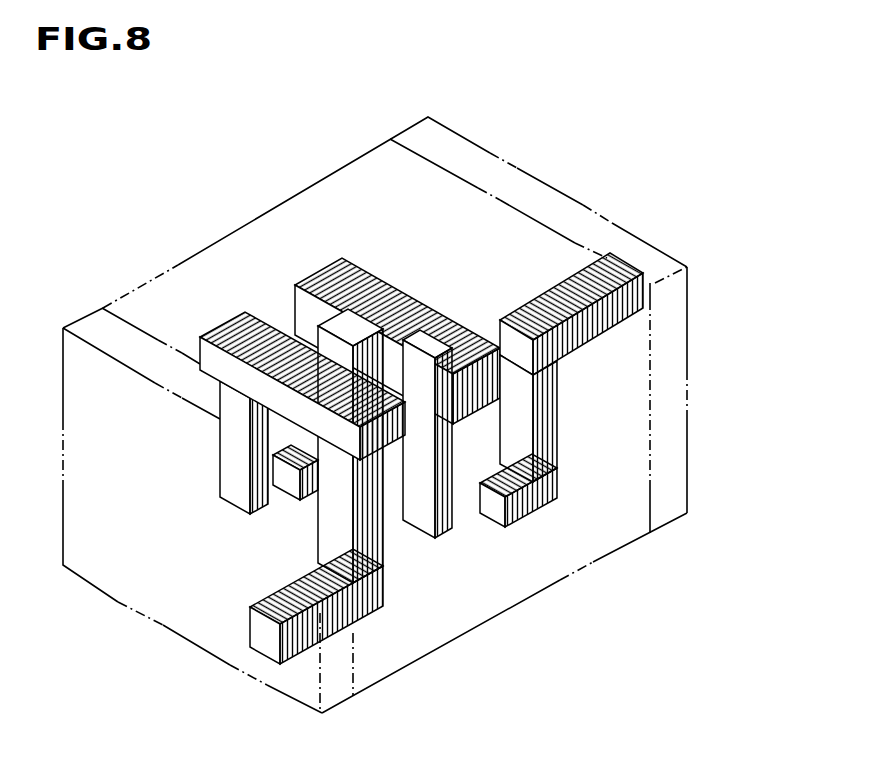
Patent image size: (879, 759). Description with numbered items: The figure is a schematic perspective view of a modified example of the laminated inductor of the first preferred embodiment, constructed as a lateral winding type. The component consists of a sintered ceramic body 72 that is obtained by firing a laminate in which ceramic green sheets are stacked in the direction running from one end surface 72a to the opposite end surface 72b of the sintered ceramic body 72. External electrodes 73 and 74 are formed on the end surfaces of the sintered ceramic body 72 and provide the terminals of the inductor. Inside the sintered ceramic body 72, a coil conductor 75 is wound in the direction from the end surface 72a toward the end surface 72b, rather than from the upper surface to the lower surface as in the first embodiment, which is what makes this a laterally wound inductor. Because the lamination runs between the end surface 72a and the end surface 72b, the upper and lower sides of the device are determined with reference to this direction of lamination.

The sintered ceramic body 72 is at (176, 258).
The end surface 72a is at (200, 628).
The end surface 72b is at (690, 320).
The external electrode 73 is at (120, 570).
The external electrode 74 is at (650, 490).
The coil conductor 75 is at (312, 257).